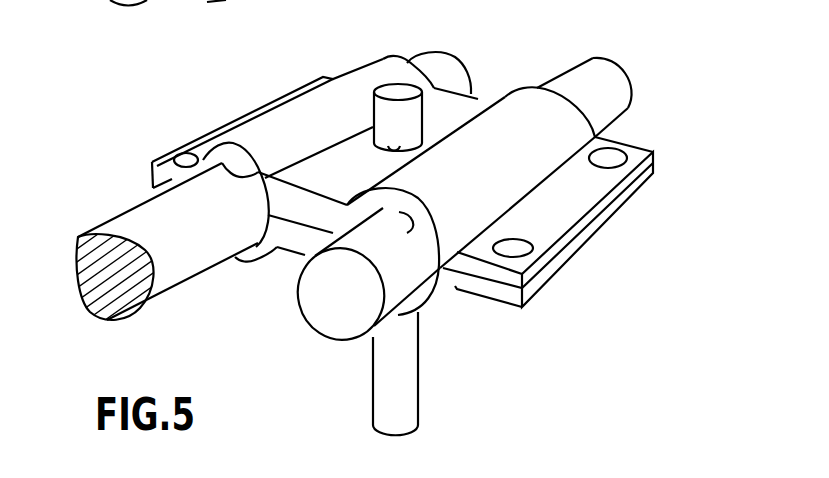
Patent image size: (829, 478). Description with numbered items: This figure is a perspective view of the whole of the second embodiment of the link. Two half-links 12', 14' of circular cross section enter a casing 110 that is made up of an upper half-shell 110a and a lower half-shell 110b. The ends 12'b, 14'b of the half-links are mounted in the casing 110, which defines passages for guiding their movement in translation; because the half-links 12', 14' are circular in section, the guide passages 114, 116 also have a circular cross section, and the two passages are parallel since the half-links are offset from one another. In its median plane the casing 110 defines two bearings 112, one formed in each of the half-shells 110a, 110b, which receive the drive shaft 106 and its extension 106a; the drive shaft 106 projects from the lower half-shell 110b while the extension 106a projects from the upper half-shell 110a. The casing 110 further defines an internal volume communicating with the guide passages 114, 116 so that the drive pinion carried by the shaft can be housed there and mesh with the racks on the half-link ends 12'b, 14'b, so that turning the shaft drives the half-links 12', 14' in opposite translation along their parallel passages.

The half-link 12' is at (154, 261).
The end of the half-link 12'b is at (439, 56).
The half-link 14' is at (590, 84).
The end of the half-link 14'b is at (345, 278).
The drive shaft 106 is at (402, 407).
The extension of the drive shaft 106a is at (401, 90).
The casing 110 is at (568, 253).
The upper half-shell 110a is at (527, 100).
The lower half-shell 110b is at (480, 290).
The bearing 112 is at (385, 146).
The guide passage 114 is at (223, 163).
The guide passage 116 is at (420, 230).